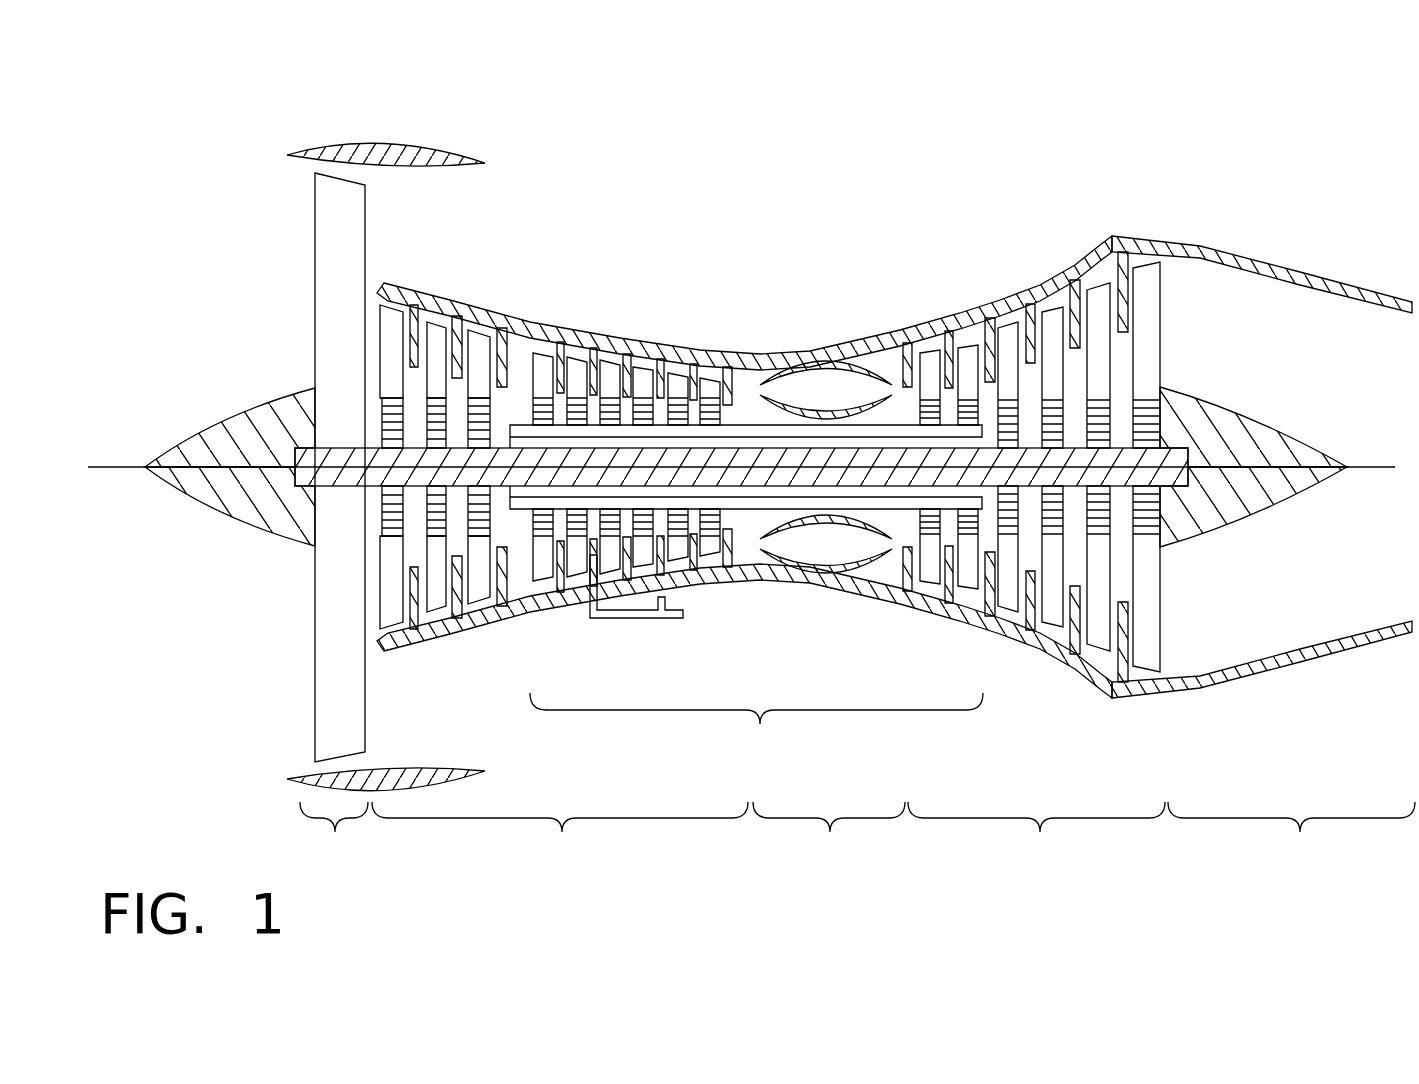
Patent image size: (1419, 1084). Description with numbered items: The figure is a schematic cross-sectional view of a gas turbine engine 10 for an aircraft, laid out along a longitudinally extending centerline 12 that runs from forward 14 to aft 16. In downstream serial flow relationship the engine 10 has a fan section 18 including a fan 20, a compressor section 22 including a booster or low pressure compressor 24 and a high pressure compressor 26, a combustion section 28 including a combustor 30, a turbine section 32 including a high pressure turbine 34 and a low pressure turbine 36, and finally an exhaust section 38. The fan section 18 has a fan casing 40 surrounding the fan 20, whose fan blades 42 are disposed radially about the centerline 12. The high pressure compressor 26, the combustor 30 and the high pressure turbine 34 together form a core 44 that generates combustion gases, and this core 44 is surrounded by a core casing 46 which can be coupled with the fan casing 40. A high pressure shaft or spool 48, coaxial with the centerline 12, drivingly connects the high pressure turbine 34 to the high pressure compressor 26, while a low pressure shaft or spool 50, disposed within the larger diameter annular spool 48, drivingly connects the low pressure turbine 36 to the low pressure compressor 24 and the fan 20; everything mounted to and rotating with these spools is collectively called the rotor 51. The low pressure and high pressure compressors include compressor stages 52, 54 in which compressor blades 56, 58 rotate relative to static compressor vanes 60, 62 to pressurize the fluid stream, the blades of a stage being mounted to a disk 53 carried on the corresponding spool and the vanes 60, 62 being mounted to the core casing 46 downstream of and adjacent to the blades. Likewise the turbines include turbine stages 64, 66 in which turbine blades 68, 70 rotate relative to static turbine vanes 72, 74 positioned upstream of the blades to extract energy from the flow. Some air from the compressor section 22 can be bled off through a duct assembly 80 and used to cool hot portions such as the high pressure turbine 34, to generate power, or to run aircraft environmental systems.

The gas turbine engine 10 is at (281, 106).
The centerline 12 is at (223, 463).
The forward 14 is at (150, 467).
The aft 16 is at (1340, 467).
The fan section 18 is at (335, 832).
The fan 20 is at (313, 253).
The compressor section 22 is at (562, 832).
The low pressure compressor 24 is at (507, 628).
The high pressure compressor 26 is at (690, 585).
The combustion section 28 is at (830, 832).
The combustor 30 is at (880, 365).
The turbine section 32 is at (1040, 832).
The high pressure turbine 34 is at (905, 620).
The low pressure turbine 36 is at (1033, 672).
The exhaust section 38 is at (1300, 832).
The fan casing 40 is at (393, 142).
The fan blades 42 is at (330, 680).
The core 44 is at (760, 724).
The core casing 46 is at (798, 348).
The HP shaft or spool 48 is at (754, 448).
The LP shaft or spool 50 is at (510, 460).
The rotor 51 is at (662, 446).
The compressor stages 52 is at (452, 323).
The disk 53 is at (482, 413).
The compressor stages 54 is at (746, 317).
The compressor blades 56 is at (388, 312).
The compressor blades 58 is at (545, 365).
The static compressor vanes 60 is at (413, 358).
The static compressor vanes 62 is at (560, 363).
The turbine stages 64 is at (929, 325).
The turbine stages 66 is at (1047, 267).
The turbine blades 68 is at (970, 353).
The turbine blades 70 is at (1098, 310).
The static turbine vanes 72 is at (950, 343).
The static turbine vanes 74 is at (1077, 307).
The duct assembly 80 is at (630, 628).